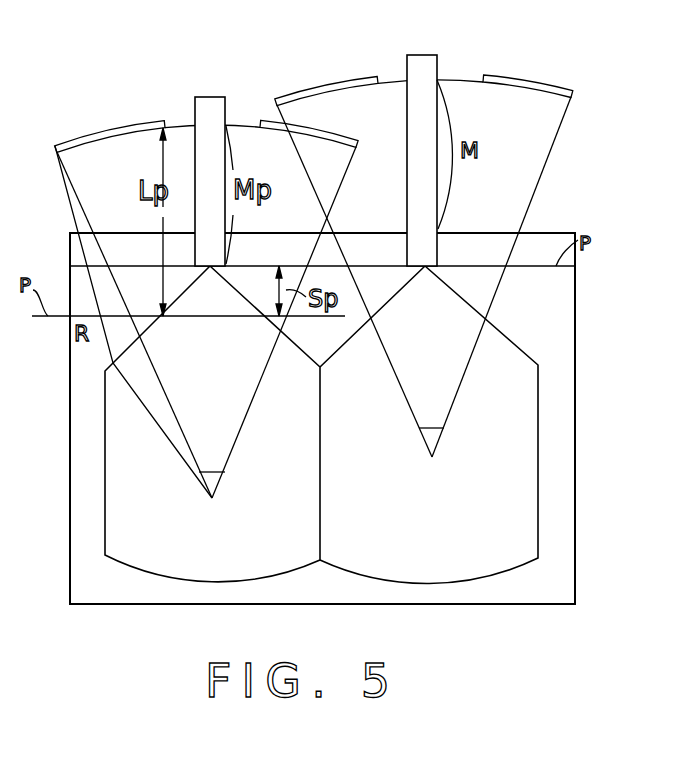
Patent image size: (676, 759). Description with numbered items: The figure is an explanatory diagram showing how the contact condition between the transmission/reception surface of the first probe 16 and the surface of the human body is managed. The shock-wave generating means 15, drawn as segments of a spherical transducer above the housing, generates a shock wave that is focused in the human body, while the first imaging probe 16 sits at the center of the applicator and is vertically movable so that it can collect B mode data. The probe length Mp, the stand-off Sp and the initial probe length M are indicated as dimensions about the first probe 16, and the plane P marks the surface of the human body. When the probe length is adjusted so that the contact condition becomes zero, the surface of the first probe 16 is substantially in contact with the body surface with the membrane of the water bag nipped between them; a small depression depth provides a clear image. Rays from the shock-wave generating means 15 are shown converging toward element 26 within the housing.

The shock-wave generating means 15 is at (101, 126).
The first imaging probe 16 is at (207, 97).
The light receiving element 26 is at (221, 487).